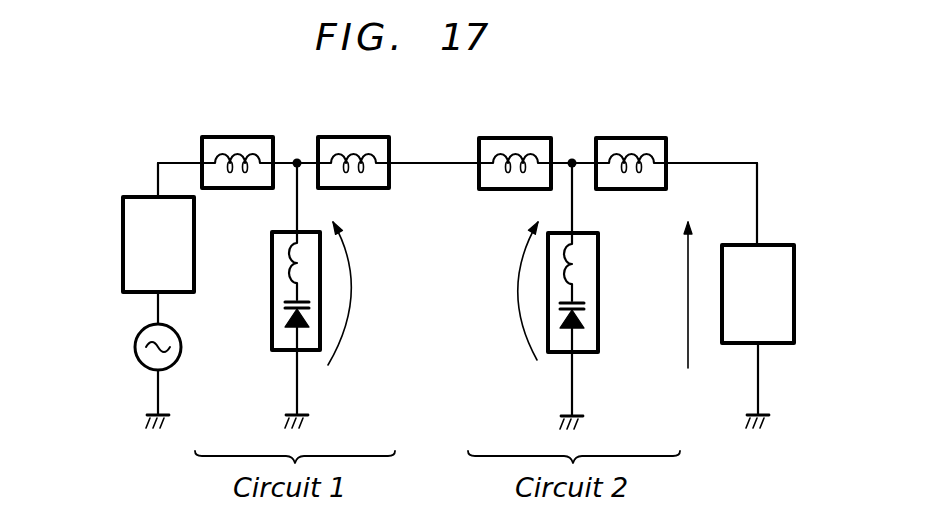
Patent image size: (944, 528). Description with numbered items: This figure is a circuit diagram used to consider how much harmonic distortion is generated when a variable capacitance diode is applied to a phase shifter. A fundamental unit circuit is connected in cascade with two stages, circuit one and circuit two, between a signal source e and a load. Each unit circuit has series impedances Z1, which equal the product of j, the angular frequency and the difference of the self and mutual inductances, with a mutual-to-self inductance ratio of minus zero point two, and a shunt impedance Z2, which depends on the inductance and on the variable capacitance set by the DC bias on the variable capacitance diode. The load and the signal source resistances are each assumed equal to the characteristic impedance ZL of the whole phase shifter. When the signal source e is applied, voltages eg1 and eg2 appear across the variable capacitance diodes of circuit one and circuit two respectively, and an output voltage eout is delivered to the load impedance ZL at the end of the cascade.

The series impedance Z1 is at (434, 146).
The shunt impedance Z2 is at (434, 324).
The characteristic impedance ZL is at (474, 306).
The signal source e is at (168, 369).
The voltage across the variable capacitance diode of circuit 1 eg1 is at (365, 293).
The voltage across the variable capacitance diode of circuit 2 eg2 is at (499, 291).
The output voltage eout is at (666, 312).